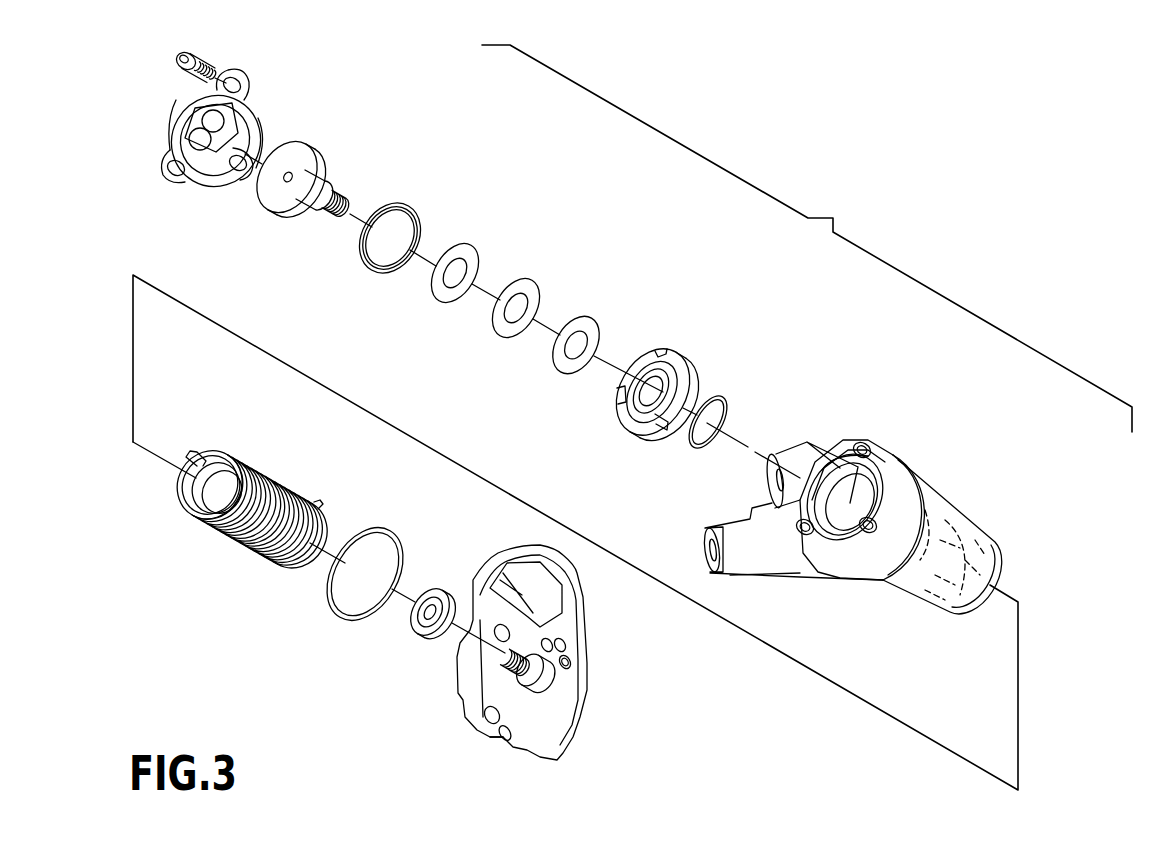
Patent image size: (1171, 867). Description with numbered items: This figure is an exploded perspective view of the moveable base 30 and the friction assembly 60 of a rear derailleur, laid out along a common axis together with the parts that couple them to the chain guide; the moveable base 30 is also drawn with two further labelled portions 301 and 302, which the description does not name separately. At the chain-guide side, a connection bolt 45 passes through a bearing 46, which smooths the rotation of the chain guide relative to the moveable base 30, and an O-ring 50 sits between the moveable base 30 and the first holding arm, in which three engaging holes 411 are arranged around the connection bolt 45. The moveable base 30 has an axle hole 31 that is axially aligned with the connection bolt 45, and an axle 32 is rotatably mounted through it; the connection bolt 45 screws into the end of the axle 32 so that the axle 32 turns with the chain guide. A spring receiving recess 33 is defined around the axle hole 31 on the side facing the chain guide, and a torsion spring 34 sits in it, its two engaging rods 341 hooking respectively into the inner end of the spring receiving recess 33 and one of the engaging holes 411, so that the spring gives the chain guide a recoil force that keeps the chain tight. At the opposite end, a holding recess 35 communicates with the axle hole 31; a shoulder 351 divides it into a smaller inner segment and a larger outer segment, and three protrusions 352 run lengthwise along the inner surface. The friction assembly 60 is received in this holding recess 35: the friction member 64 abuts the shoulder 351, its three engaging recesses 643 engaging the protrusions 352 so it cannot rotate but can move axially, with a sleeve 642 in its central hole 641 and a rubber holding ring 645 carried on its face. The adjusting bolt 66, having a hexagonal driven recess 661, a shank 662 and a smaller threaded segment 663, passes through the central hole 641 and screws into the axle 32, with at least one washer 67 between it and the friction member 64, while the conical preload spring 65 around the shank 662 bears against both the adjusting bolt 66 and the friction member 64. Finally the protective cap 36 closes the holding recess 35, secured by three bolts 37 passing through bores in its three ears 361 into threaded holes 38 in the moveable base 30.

The moveable base 30 is at (836, 518).
The axle hole 31 is at (993, 557).
The axle 32 is at (950, 580).
The spring receiving recess 33 is at (972, 505).
The torsion spring 34 is at (273, 500).
The engaging rod 341 is at (192, 452).
The holding recess 35 is at (833, 474).
The shoulder 351 is at (843, 498).
The protrusion 352 is at (871, 457).
The protective cap 36 is at (181, 136).
The ear 361 is at (168, 161).
The bolt 37 is at (170, 68).
The threaded hole 38 is at (866, 443).
The mounting block 301 is at (800, 446).
The mounting arm 302 is at (738, 522).
The connection bolt 45 is at (545, 688).
The bearing 46 is at (415, 631).
The engaging hole 411 is at (572, 663).
The O-ring 50 is at (331, 601).
The friction assembly 60 is at (594, 231).
The friction member 64 is at (666, 352).
The central hole 641 is at (648, 396).
The sleeve 642 is at (560, 362).
The engaging recess 643 is at (661, 352).
The holding ring 645 is at (691, 441).
The preload spring 65 is at (372, 258).
The adjusting bolt 66 is at (303, 174).
The driven recess 661 is at (291, 172).
The shank 662 is at (326, 190).
The threaded segment 663 is at (342, 206).
The washer 67 is at (436, 292).